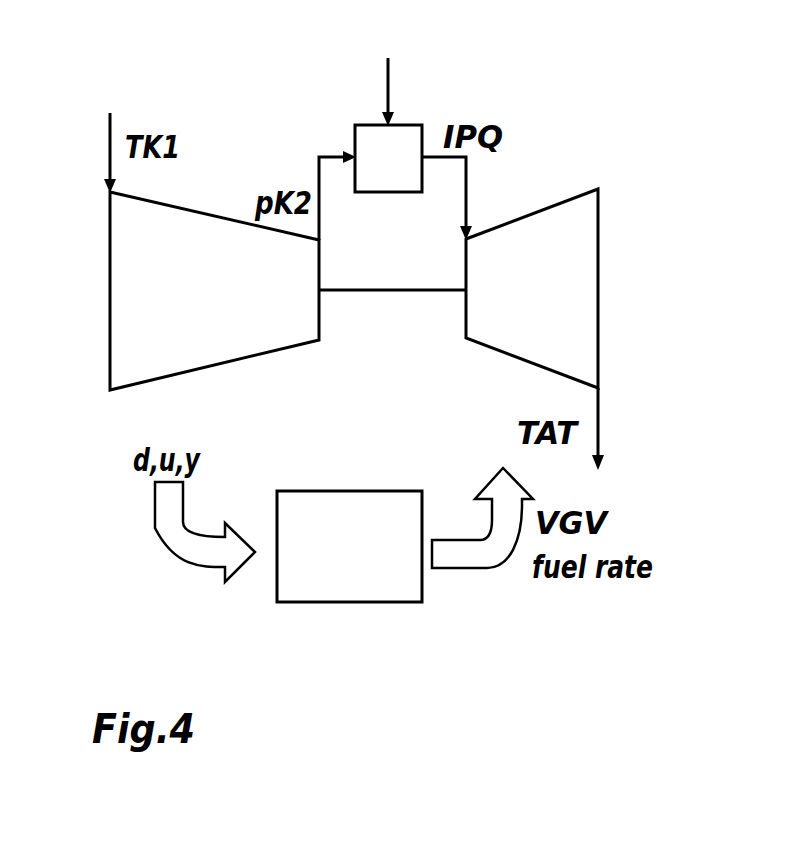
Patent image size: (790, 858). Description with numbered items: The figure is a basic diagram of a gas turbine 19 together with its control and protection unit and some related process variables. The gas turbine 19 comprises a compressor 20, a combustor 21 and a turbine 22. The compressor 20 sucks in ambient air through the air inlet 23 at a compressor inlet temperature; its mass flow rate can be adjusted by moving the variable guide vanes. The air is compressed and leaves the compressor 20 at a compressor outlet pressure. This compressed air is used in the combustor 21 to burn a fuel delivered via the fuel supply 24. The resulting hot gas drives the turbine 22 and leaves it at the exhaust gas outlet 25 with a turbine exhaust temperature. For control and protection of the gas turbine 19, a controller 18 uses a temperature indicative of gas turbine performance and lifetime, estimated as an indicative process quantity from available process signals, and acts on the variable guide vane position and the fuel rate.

The controller 18 is at (366, 565).
The gas turbine 19 is at (397, 386).
The compressor 20 is at (219, 306).
The combustor 21 is at (367, 137).
The turbine 22 is at (541, 306).
The air inlet 23 is at (110, 145).
The fuel supply 24 is at (392, 68).
The exhaust gas outlet 25 is at (602, 423).